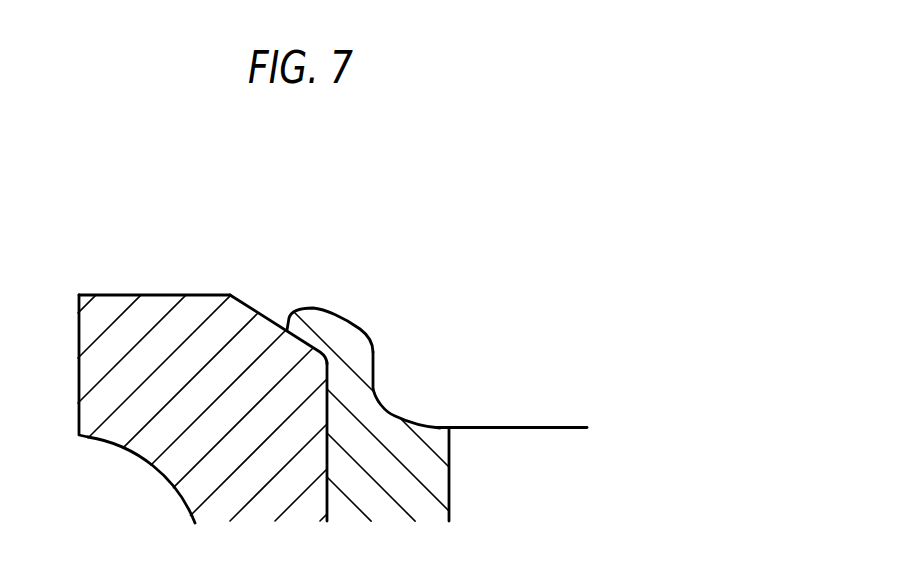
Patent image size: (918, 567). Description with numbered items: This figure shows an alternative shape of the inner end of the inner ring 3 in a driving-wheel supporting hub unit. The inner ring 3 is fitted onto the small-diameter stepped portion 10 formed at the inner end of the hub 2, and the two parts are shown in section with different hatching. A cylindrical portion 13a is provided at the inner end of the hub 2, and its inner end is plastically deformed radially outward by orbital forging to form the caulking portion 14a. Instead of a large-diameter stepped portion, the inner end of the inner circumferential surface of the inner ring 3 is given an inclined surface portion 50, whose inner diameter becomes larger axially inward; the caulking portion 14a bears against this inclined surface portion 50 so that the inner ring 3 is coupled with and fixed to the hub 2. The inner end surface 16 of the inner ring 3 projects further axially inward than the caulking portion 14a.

The inner end surface 16 is at (140, 294).
The inclined surface portion 50 is at (253, 309).
The caulking portion 14a is at (308, 310).
The cylindrical portion 13a is at (363, 367).
The hub 2 is at (413, 490).
The small-diameter stepped portion 10 is at (327, 441).
The inner ring 3 is at (123, 410).